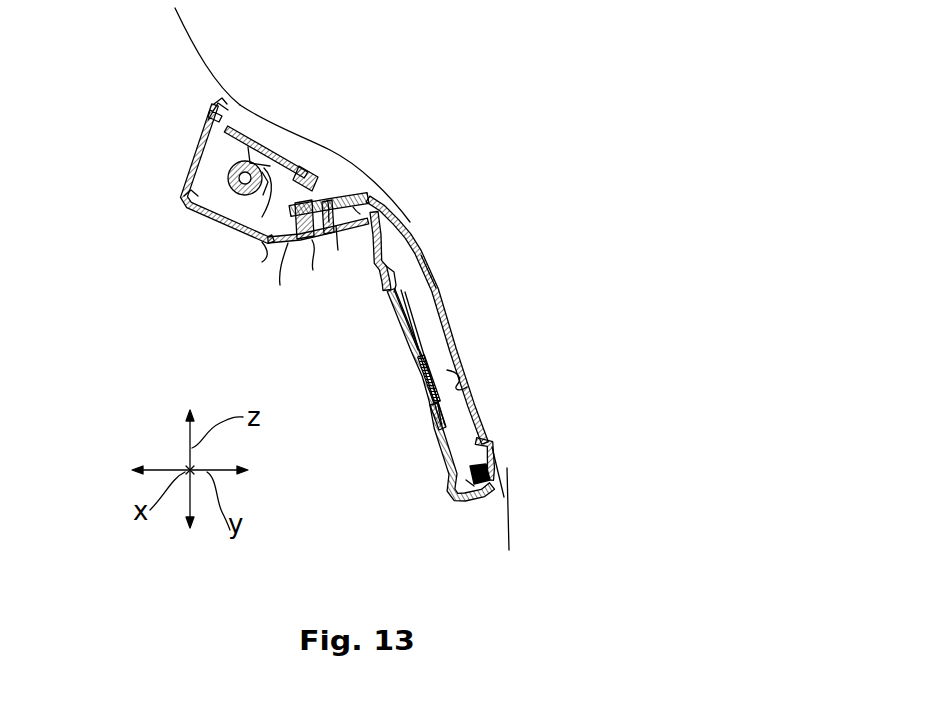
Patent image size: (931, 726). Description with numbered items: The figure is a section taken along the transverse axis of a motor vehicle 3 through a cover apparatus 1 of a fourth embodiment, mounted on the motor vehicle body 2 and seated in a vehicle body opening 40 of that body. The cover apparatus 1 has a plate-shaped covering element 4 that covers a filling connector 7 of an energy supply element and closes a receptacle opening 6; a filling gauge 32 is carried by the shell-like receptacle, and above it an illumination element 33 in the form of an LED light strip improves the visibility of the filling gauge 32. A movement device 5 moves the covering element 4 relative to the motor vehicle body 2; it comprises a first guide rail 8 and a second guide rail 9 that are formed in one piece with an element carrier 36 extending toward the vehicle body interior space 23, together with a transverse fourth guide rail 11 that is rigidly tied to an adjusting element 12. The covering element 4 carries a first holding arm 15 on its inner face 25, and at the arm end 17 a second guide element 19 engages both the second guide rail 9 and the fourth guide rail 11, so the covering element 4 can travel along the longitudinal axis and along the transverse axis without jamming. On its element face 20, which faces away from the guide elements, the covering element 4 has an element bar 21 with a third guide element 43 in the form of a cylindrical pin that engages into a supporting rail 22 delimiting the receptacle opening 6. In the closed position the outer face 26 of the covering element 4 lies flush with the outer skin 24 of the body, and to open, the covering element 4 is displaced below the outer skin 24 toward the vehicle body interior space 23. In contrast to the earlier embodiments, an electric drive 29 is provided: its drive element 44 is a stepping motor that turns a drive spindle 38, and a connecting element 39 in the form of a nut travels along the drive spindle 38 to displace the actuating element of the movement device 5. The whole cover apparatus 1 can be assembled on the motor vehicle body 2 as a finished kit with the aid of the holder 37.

The cover apparatus 1 is at (484, 285).
The motor vehicle body 2 is at (303, 134).
The motor vehicle 3 is at (403, 167).
The covering element 4 is at (475, 285).
The movement device 5 is at (353, 150).
The receptacle opening 6 is at (404, 266).
The filling connector 7 is at (489, 395).
The filling gauge 32 is at (418, 328).
The first guide rail 8 is at (327, 234).
The second guide rail 9 is at (288, 243).
The fourth guide rail 11 is at (283, 235).
The adjusting element 12 is at (327, 205).
The first holding arm 15 is at (353, 207).
The arm end 17 is at (280, 246).
The second guide element 19 is at (313, 240).
The element face 20 is at (511, 270).
The outer face 26 is at (437, 277).
The element bar 21 is at (492, 450).
The supporting rail 22 is at (497, 490).
The vehicle body interior space 23 is at (197, 158).
The outer skin 24 is at (506, 474).
The inner face 25 is at (462, 388).
The electric drive 29 is at (170, 200).
The illumination element 33 is at (353, 226).
The element carrier 36 is at (338, 230).
The holder 37 is at (227, 102).
The drive spindle 38 is at (228, 170).
The connecting element 39 is at (228, 181).
The vehicle body opening 40 is at (398, 212).
The third guide element 43 is at (473, 500).
The drive element 44 is at (213, 166).